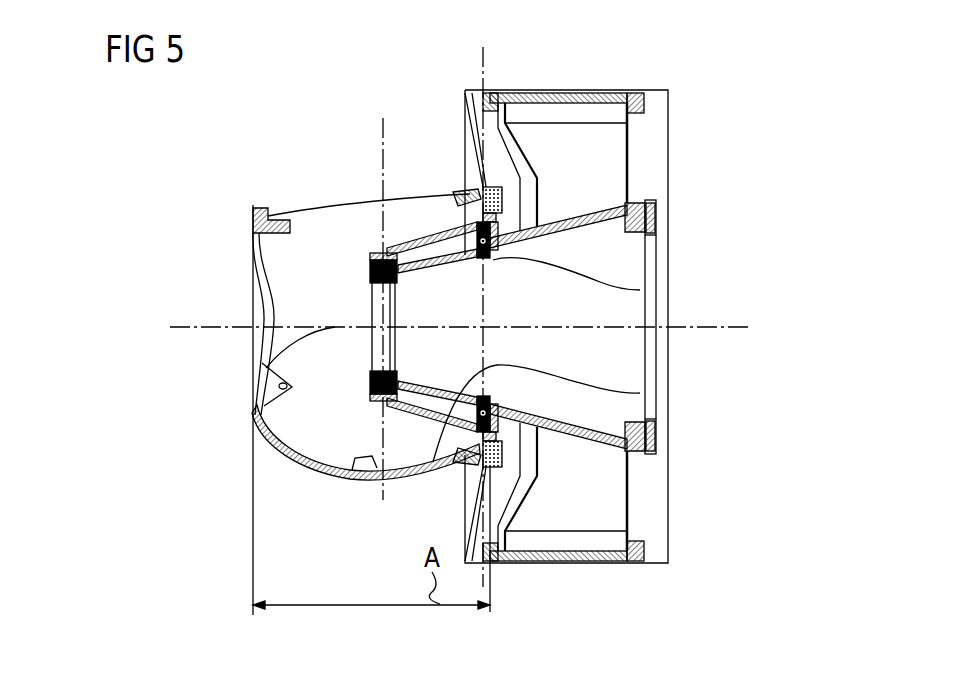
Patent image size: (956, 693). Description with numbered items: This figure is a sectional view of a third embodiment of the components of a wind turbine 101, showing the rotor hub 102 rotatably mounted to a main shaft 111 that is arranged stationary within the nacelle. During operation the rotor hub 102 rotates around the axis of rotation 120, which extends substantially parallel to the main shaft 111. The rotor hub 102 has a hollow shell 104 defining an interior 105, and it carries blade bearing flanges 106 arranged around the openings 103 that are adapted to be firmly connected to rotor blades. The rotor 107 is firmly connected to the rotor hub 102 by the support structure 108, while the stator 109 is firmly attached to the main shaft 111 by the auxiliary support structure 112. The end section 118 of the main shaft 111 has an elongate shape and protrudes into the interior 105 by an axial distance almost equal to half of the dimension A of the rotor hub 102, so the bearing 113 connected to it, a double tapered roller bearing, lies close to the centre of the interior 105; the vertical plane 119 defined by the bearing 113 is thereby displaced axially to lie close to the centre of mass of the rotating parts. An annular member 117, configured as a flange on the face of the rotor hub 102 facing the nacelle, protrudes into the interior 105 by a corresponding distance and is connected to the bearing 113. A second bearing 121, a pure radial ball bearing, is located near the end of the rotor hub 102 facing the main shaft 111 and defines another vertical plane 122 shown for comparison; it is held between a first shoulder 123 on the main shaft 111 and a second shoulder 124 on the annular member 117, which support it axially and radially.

The wind turbine 101 is at (218, 173).
The rotor hub 102 is at (336, 494).
The openings 103 is at (303, 430).
The hollow shell 104 is at (268, 301).
The interior 105 is at (322, 326).
The blade bearing flanges 106 is at (262, 395).
The rotor 107 is at (592, 565).
The support structure 108 is at (478, 488).
The stator 109 is at (538, 564).
The main shaft 111 is at (622, 447).
The auxiliary support structure 112 is at (628, 153).
The bearing 113 is at (378, 248).
The annular member 117 is at (478, 222).
The end section of the main shaft 118 is at (640, 393).
The vertical plane 119 is at (382, 120).
The axis of rotation 120 is at (197, 330).
The second bearing 121 is at (500, 95).
The vertical plane 122 is at (483, 72).
The first shoulder 123 is at (640, 290).
The second shoulder 124 is at (470, 195).